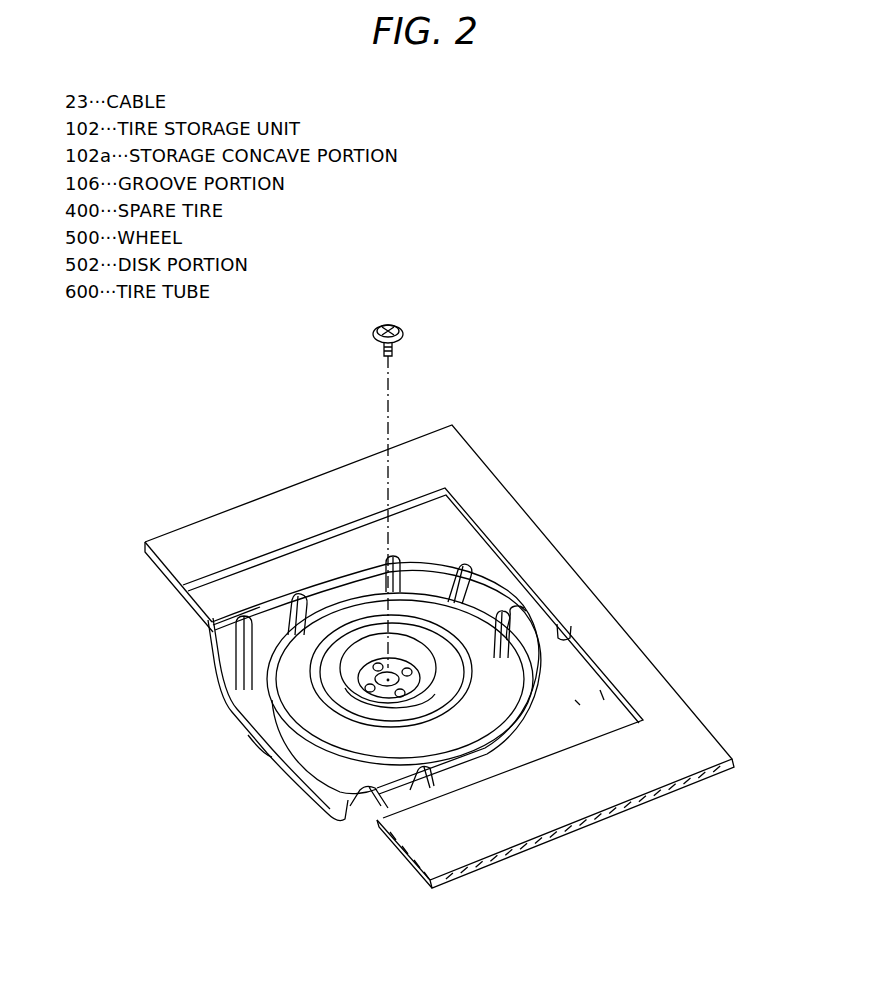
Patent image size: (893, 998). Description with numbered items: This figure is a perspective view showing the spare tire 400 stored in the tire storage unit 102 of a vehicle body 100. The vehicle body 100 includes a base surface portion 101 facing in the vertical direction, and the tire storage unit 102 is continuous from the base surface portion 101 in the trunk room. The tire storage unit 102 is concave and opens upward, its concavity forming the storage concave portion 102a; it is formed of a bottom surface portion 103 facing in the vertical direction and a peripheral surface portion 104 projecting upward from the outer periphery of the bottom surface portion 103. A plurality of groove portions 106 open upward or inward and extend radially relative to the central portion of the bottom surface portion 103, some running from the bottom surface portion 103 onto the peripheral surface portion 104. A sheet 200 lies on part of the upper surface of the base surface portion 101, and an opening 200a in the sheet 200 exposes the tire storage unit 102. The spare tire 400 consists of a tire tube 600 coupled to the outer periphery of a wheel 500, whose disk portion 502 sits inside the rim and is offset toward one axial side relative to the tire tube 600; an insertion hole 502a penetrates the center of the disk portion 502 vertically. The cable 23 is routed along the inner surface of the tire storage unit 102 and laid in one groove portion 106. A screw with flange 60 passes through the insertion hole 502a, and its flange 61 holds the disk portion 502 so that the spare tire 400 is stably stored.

The cable 23 is at (512, 648).
The screw with flange 60 is at (395, 322).
The flange 61 is at (405, 334).
The vehicle body 100 is at (627, 640).
The base surface portion 101 is at (583, 693).
The tire storage unit 102 is at (283, 625).
The storage concave portion 102a is at (176, 588).
The bottom surface portion 103 is at (275, 748).
The peripheral surface portion 104 is at (248, 625).
The groove portion 106 is at (413, 560).
The sheet 200 is at (548, 813).
The opening 200a is at (572, 670).
The spare tire 400 is at (515, 636).
The wheel 500 is at (438, 687).
The disk portion 502 is at (347, 710).
The insertion hole 502a is at (365, 662).
The tire tube 600 is at (363, 603).